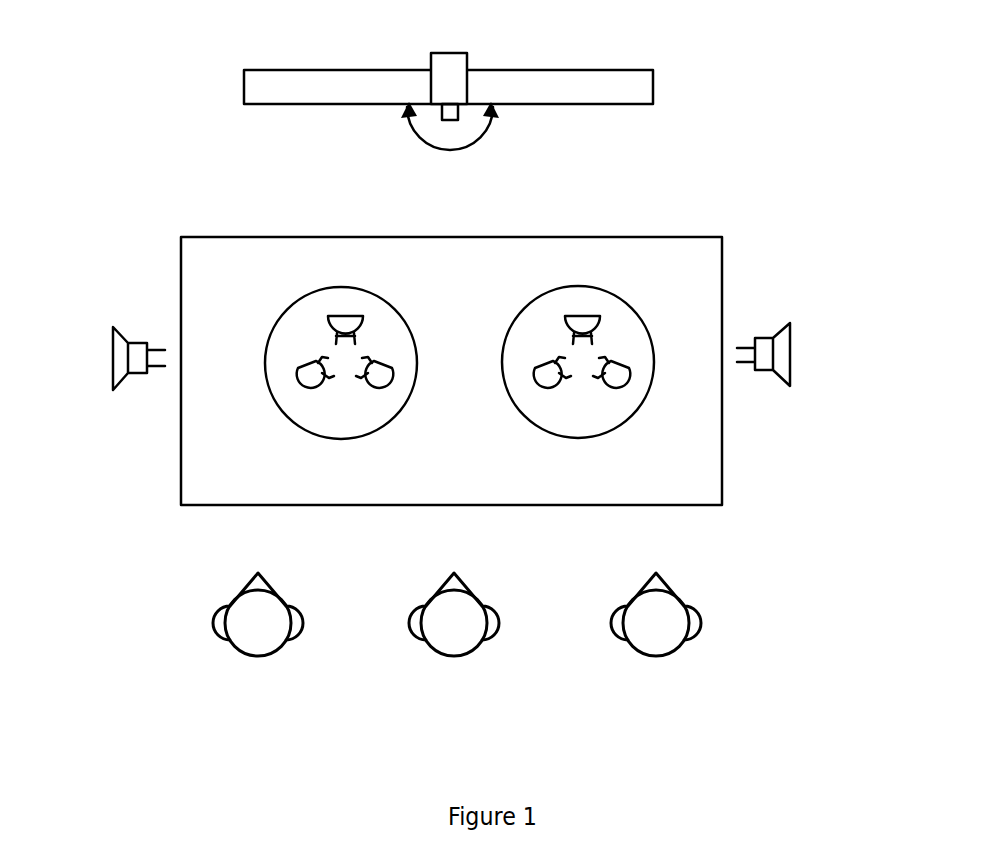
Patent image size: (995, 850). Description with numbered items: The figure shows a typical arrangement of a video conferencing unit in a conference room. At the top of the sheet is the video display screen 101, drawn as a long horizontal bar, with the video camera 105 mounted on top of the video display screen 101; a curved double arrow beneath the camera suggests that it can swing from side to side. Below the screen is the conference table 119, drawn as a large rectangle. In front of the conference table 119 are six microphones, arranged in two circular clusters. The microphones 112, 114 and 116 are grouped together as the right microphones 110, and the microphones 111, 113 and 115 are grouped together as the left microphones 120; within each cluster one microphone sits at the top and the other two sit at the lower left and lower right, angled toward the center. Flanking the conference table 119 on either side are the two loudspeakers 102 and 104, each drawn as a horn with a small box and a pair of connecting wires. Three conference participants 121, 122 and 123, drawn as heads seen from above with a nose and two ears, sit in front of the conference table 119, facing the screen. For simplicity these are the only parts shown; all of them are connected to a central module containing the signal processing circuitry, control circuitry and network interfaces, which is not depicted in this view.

The video display screen 101 is at (568, 67).
The video camera 105 is at (437, 52).
The conference table 119 is at (487, 237).
The right microphones 110 is at (333, 287).
The left microphones 120 is at (570, 285).
The microphone 116 is at (350, 313).
The microphone 112 is at (303, 377).
The microphone 114 is at (387, 363).
The microphone 115 is at (587, 313).
The microphone 111 is at (540, 377).
The microphone 113 is at (622, 363).
The loudspeaker 102 is at (112, 350).
The loudspeaker 104 is at (788, 333).
The conference participant 121 is at (230, 643).
The conference participant 122 is at (423, 643).
The conference participant 123 is at (627, 643).